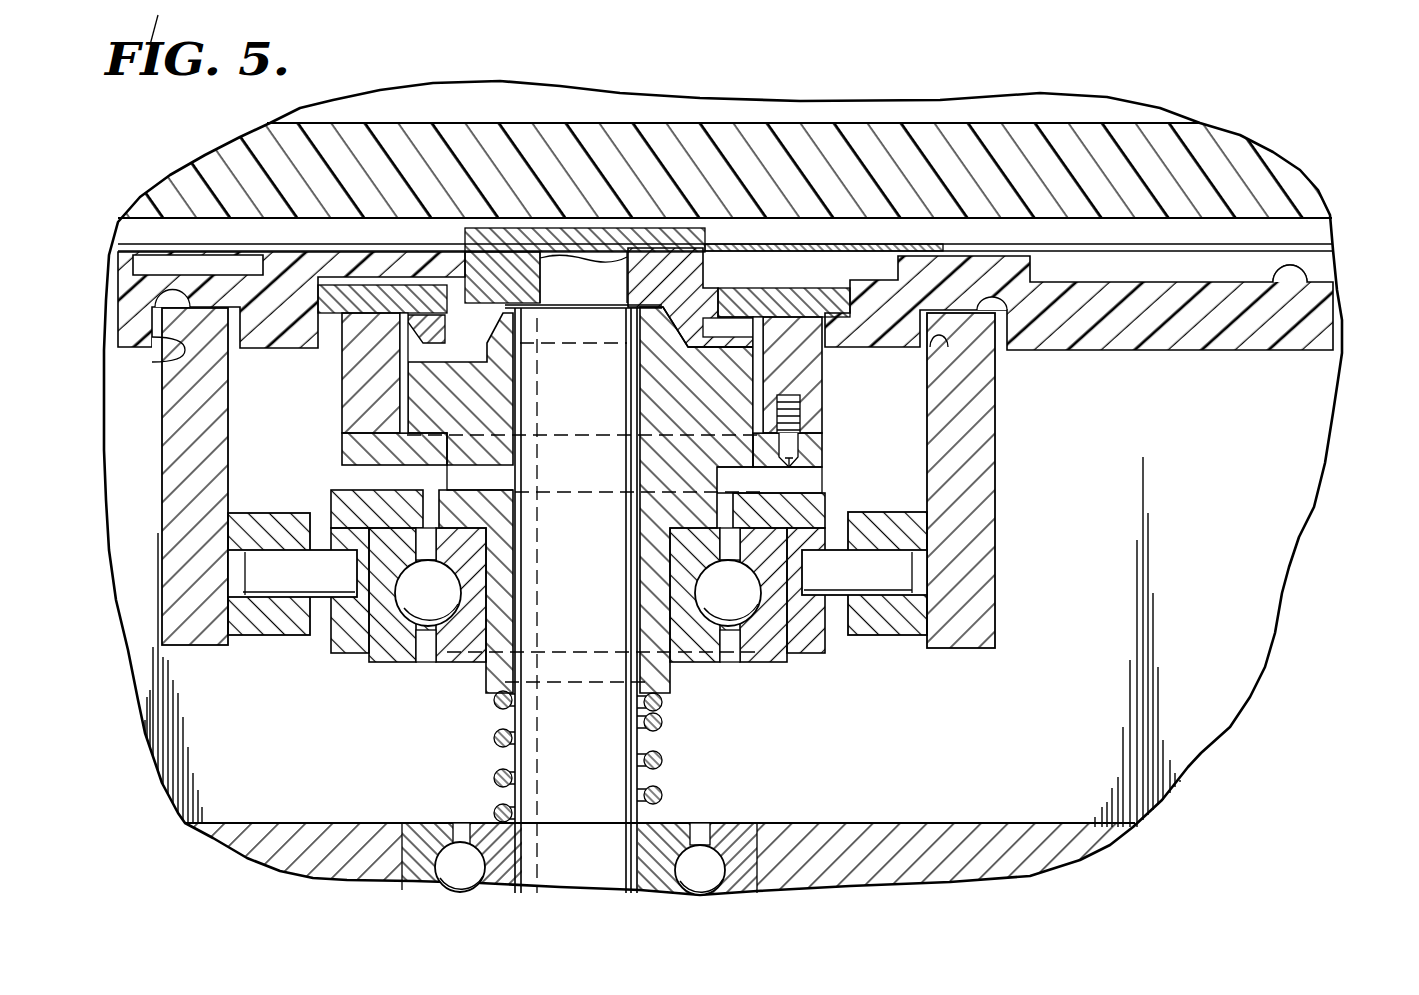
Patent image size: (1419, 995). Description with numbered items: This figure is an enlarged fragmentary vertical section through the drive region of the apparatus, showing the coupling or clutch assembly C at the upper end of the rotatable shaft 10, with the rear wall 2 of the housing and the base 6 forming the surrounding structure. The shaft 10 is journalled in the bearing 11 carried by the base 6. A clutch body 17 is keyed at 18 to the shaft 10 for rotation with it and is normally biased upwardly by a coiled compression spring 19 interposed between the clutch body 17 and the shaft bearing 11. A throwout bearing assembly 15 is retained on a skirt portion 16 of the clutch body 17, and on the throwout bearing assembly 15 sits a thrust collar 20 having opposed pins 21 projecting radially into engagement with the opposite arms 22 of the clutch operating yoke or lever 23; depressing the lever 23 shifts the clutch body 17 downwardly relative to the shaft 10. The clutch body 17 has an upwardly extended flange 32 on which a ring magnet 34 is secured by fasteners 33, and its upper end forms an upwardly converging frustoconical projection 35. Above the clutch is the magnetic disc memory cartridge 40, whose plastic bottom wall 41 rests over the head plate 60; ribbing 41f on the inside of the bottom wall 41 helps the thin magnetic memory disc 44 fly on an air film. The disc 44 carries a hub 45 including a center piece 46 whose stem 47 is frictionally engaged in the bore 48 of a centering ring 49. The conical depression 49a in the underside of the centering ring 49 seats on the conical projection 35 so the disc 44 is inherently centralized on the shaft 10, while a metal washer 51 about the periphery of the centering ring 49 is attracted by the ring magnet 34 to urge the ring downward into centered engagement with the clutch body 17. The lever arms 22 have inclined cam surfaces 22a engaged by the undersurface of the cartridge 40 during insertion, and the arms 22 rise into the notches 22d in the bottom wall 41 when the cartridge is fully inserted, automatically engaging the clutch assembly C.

The rear wall 2 is at (1238, 643).
The base 6 is at (818, 845).
The rotatable shaft 10 is at (583, 599).
The bearing 11 is at (415, 823).
The throwout bearing assembly 15 is at (378, 660).
The skirt portion 16 is at (490, 645).
The clutch body 17 is at (440, 410).
The key 18 is at (518, 470).
The coiled compression spring 19 is at (662, 710).
The thrust collar 20 is at (808, 638).
The pins 21 is at (577, 573).
The arms 22 is at (182, 606).
The cam surfaces 22a is at (190, 297).
The slots or notches 22d is at (162, 340).
The clutch operating yoke or lever 23 is at (995, 513).
The flange 32 is at (360, 450).
The fasteners 33 is at (782, 458).
The ring magnet 34 is at (372, 378).
The frustoconical projection 35 is at (487, 330).
The magnetic disc memory cartridge 40 is at (1312, 356).
The bottom wall 41 is at (1310, 320).
The ribbing 41f is at (1300, 262).
The magnetic memory disc 44 is at (912, 245).
The hub 45 is at (668, 252).
The center piece 46 is at (578, 255).
The stem 47 is at (583, 277).
The bore 48 is at (540, 272).
The centering ring 49 is at (700, 268).
The conical depression 49a is at (665, 322).
The metal washer 51 is at (367, 283).
The head plate 60 is at (1222, 152).
The coupling or clutch assembly C is at (443, 727).